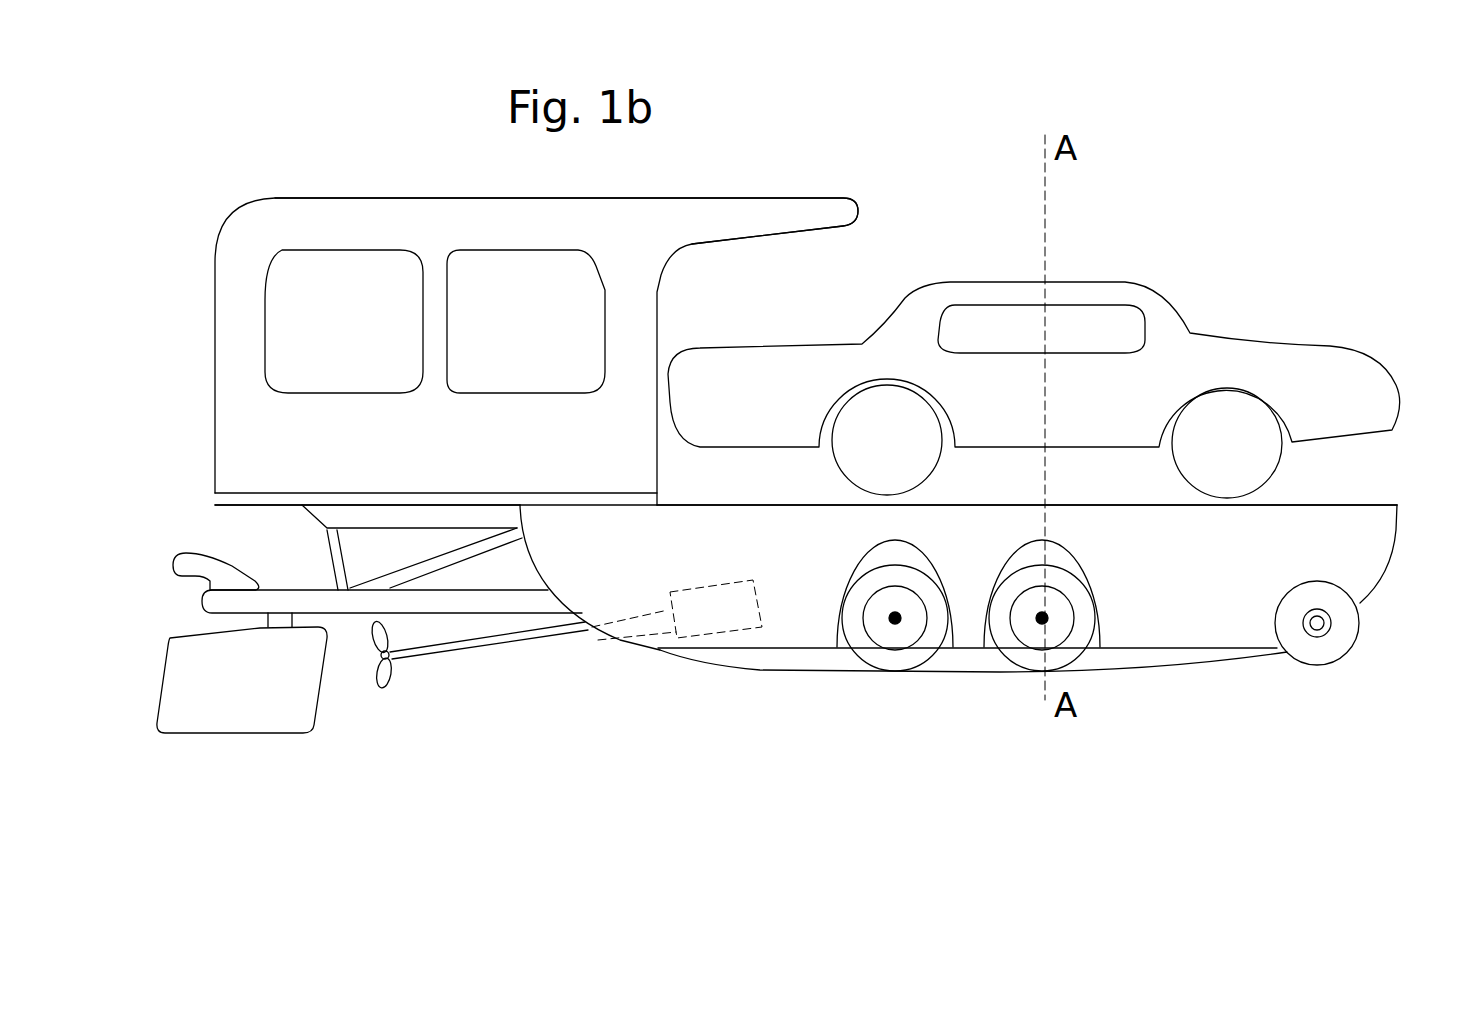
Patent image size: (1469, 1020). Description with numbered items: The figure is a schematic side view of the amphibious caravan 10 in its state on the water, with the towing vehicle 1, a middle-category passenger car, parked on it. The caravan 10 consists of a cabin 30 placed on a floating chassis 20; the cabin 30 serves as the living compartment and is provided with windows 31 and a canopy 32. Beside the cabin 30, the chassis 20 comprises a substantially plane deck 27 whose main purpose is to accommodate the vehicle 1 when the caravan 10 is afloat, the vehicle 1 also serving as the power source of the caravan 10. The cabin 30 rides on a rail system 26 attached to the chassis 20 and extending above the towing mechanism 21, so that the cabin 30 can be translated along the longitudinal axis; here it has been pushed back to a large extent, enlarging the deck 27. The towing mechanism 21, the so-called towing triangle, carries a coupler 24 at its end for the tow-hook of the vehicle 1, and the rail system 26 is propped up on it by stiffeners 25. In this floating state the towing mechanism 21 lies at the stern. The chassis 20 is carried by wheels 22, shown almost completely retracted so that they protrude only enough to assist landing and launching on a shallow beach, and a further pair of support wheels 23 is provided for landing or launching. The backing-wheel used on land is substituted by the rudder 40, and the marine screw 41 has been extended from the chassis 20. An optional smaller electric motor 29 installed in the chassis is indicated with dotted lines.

The vehicle 1 is at (1088, 290).
The amphibious caravan 10 is at (1040, 747).
The floating chassis 20 is at (806, 588).
The towing mechanism 21 is at (287, 595).
The wheels 22 is at (1082, 612).
The support wheels 23 is at (1345, 628).
The coupler 24 is at (230, 582).
The stiffeners 25 is at (440, 565).
The rail system 26 is at (458, 513).
The deck 27 is at (983, 500).
The electric motor 29 is at (697, 620).
The cabin 30 is at (536, 351).
The windows 31 is at (435, 321).
The canopy 32 is at (566, 221).
The rudder 40 is at (275, 700).
The marine screw 41 is at (422, 652).